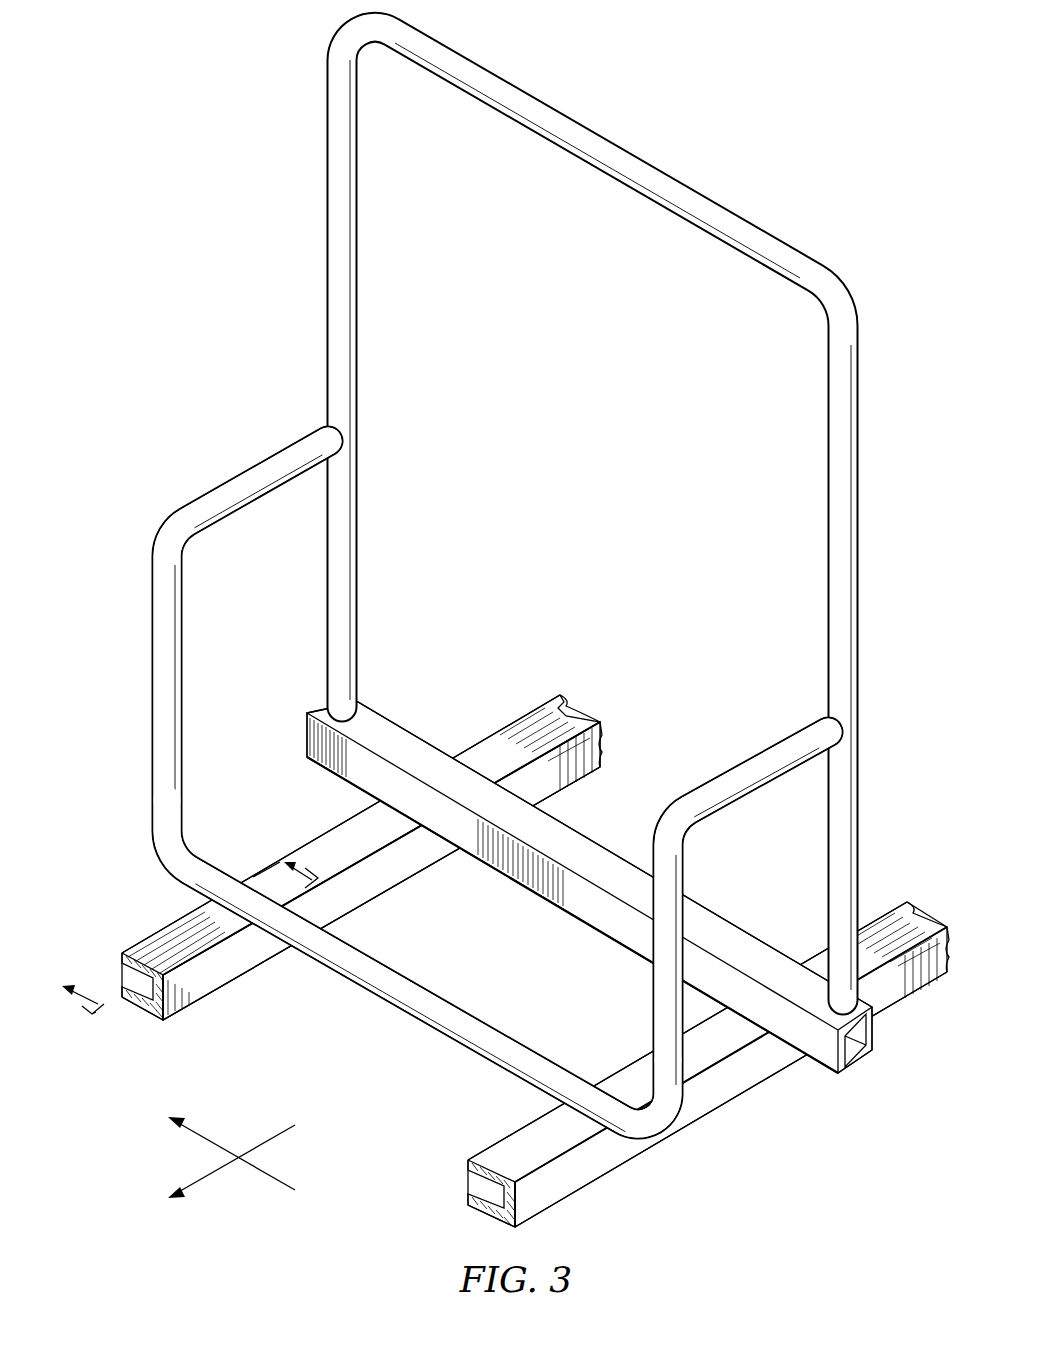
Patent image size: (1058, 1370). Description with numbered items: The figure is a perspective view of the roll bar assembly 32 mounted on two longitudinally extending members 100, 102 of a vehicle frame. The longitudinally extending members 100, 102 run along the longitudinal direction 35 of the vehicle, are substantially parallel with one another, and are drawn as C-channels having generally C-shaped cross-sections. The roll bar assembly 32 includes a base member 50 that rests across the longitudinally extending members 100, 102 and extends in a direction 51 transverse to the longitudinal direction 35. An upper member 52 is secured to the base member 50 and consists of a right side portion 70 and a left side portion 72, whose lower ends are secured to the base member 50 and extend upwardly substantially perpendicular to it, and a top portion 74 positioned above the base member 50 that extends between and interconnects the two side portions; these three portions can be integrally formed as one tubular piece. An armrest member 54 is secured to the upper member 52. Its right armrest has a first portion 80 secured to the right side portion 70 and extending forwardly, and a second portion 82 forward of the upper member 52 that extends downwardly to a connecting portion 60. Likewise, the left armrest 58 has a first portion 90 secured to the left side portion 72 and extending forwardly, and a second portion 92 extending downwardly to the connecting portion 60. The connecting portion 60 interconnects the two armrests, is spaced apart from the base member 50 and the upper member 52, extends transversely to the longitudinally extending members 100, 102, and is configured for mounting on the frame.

The roll bar assembly 32 is at (494, 630).
The base member 50 is at (596, 856).
The upper member 52 is at (592, 513).
The armrest member 54 is at (209, 601).
The second armrest 58 is at (711, 880).
The connecting portion 60 is at (441, 1042).
The right side portion 70 is at (326, 205).
The left side portion 72 is at (860, 540).
The top portion 74 is at (666, 168).
The first portion of the right armrest 80 is at (232, 522).
The second portion of the right armrest 82 is at (150, 705).
The first portion of the left armrest 90 is at (720, 775).
The second portion of the left armrest 92 is at (652, 1002).
The longitudinally extending member 100 is at (236, 969).
The longitudinally extending member 102 is at (578, 1180).
The longitudinal direction 35 is at (254, 1146).
The direction 51 is at (270, 1182).